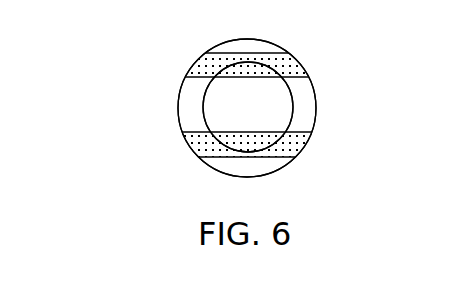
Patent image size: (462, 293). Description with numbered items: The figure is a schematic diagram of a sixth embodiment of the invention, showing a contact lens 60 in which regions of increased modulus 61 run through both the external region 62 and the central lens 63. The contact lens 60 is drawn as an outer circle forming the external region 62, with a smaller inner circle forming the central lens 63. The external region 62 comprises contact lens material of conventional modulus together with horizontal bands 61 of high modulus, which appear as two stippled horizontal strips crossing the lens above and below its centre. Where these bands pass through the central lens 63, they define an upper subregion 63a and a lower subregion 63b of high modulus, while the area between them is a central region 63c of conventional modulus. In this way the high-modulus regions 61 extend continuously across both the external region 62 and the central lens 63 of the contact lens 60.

The contact lens 60 is at (228, 94).
The regions of increased modulus 61 is at (284, 70).
The external region 62 is at (278, 46).
The central lens 63 is at (205, 112).
The upper subregion 63a is at (249, 67).
The lower subregion 63b is at (252, 138).
The central region 63c is at (273, 103).